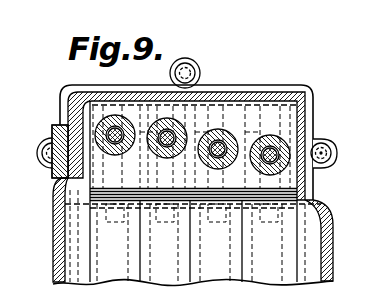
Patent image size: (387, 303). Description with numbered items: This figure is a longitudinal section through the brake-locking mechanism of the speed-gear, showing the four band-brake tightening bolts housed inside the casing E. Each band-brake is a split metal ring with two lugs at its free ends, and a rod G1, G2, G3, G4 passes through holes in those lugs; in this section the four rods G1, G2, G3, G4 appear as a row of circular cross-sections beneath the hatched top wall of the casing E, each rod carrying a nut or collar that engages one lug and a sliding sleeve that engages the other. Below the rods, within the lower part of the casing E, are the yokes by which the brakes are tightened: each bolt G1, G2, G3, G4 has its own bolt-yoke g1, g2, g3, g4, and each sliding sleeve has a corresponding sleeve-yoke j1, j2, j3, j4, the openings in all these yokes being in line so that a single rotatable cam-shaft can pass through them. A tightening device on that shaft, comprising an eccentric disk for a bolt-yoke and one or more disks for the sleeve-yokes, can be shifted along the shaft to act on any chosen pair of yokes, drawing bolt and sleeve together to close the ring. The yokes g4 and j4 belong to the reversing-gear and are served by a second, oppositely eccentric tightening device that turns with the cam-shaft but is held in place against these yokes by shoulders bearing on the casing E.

The casing E is at (329, 213).
The rod G1 is at (170, 136).
The rod G2 is at (222, 142).
The rod G3 is at (272, 148).
The rod G4 is at (113, 134).
The bolt-yoke g1 is at (178, 252).
The bolt-yoke g2 is at (244, 252).
The bolt-yoke g3 is at (291, 252).
The bolt-yoke g4 is at (128, 252).
The sleeve-yoke j1 is at (157, 229).
The sleeve-yoke j2 is at (215, 229).
The sleeve-yoke j3 is at (264, 229).
The sleeve-yoke j4 is at (109, 229).